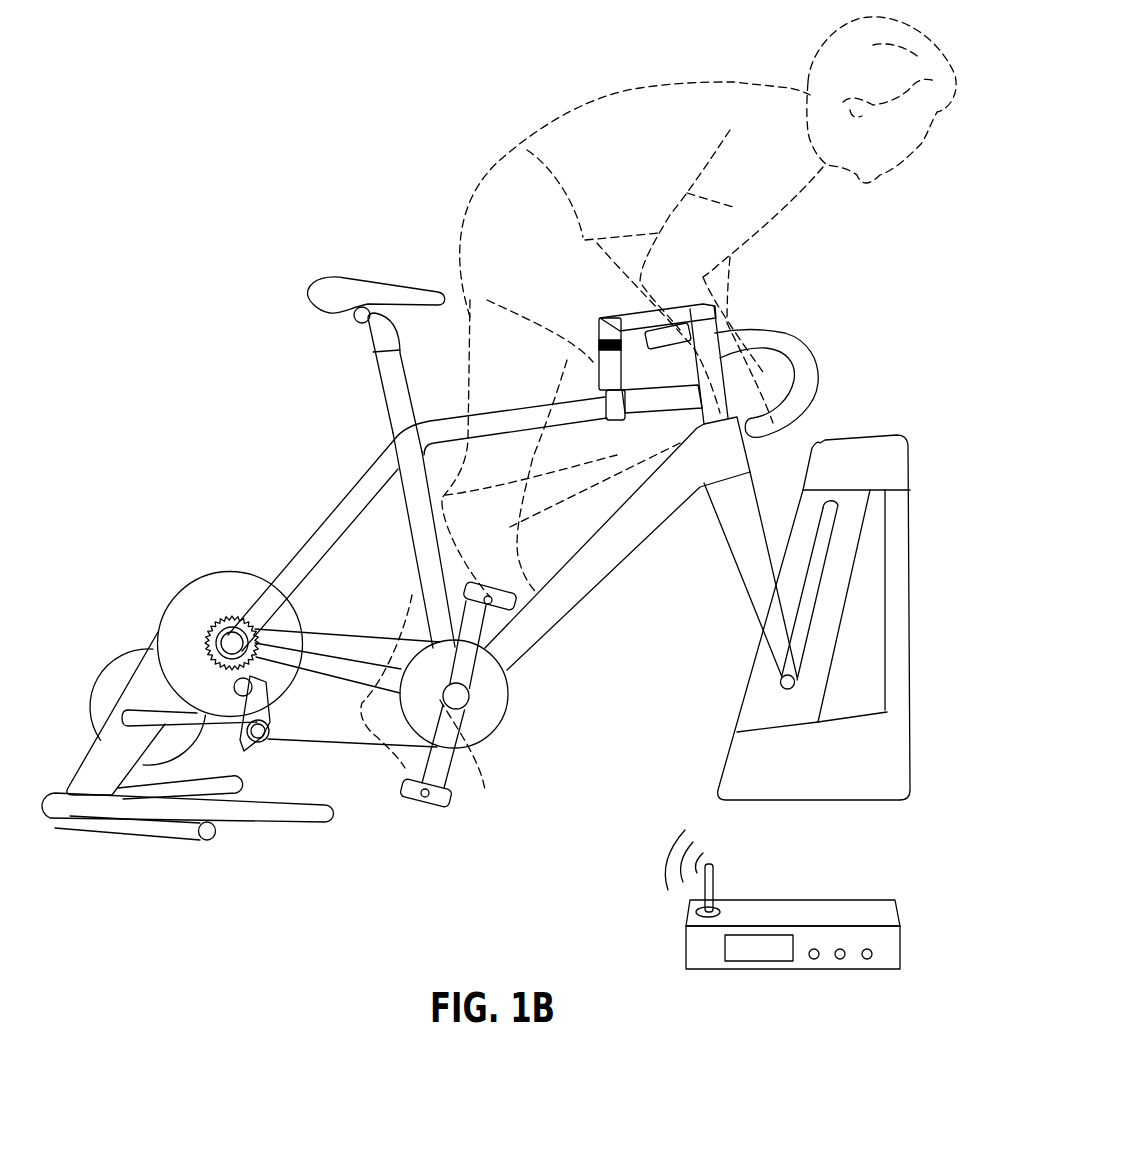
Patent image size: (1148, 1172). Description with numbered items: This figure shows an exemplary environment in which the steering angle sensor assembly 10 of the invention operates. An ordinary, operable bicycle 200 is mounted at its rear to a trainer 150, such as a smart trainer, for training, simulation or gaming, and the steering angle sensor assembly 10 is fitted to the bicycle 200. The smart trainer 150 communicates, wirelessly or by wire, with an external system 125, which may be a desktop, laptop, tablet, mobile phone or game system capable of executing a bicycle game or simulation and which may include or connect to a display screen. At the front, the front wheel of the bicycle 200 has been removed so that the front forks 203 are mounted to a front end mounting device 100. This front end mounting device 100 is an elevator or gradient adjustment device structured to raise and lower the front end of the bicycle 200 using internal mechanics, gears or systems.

The steering angle sensor assembly 10 is at (597, 307).
The bicycle 200 is at (307, 477).
The trainer 150 is at (138, 618).
The front end mounting device 100 is at (933, 497).
The front forks 203 is at (740, 548).
The external system 125 is at (793, 910).